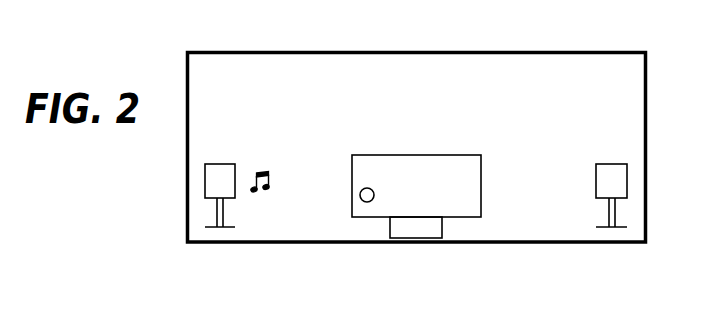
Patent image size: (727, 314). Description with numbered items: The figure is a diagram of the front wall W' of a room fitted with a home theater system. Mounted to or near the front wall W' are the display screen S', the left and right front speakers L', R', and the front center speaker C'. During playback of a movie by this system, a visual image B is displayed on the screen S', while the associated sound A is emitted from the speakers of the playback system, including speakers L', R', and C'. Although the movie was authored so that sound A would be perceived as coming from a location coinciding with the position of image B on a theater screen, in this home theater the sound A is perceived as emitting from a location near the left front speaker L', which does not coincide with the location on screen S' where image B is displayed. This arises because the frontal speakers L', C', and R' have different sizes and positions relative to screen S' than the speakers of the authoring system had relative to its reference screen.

The front wall W' is at (441, 148).
The display screen S' is at (472, 120).
The front center speaker C' is at (448, 245).
The visual image B is at (360, 196).
The left front speaker L' is at (187, 196).
The right front speaker R' is at (642, 185).
The sound A is at (272, 181).